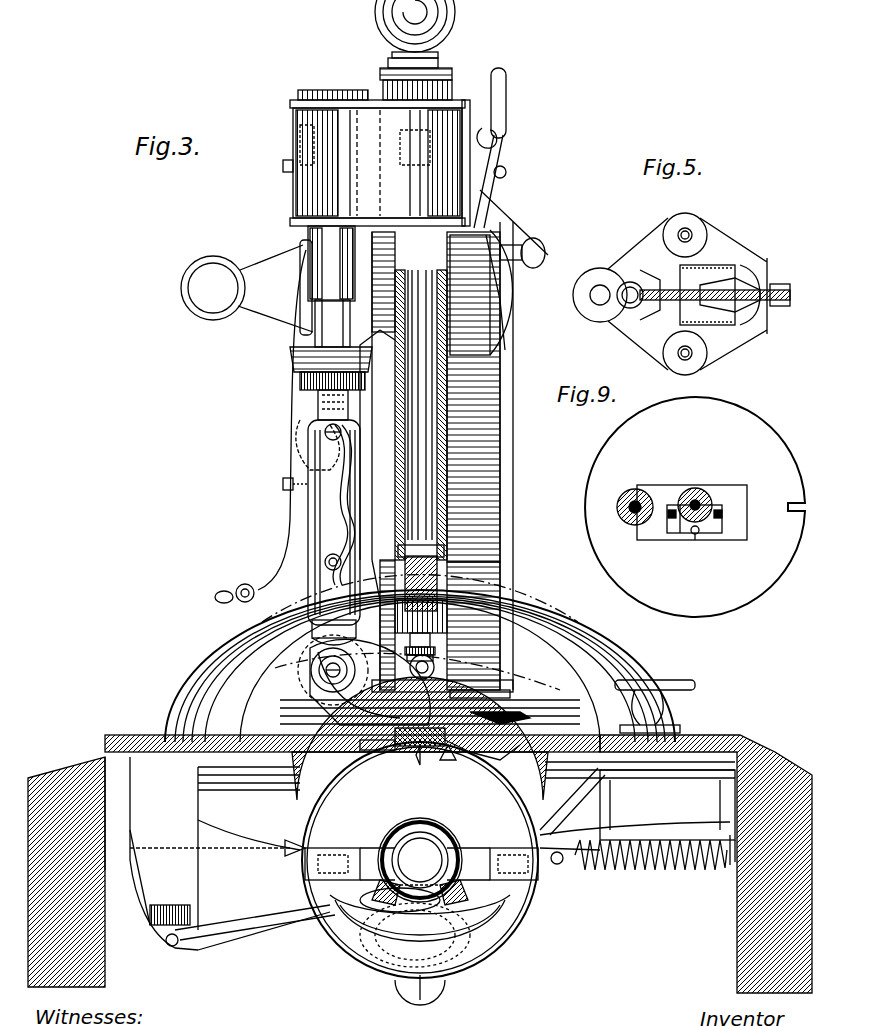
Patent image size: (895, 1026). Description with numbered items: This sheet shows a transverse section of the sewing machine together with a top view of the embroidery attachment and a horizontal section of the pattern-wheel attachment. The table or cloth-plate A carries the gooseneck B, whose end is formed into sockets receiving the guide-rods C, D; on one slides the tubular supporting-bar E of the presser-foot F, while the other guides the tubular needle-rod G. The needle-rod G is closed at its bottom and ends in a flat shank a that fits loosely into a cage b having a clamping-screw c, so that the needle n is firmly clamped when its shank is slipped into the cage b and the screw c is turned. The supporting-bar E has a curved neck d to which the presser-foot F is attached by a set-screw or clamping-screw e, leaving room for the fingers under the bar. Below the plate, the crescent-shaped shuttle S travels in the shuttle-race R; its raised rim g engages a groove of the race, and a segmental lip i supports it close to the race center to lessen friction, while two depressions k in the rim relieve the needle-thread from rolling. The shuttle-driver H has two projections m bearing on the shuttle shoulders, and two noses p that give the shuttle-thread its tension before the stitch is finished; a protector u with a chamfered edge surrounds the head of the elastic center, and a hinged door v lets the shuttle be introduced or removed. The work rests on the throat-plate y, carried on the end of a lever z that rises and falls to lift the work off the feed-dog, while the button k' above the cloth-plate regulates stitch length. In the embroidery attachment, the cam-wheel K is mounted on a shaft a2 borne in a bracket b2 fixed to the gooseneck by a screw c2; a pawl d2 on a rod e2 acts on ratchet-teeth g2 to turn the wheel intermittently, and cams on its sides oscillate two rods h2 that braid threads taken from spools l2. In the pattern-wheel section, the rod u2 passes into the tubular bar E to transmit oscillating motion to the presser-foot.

In FIG. 3, the table or cloth-plate A is at (228, 757).
In FIG. 9, the table or cloth-plate A is at (695, 507).
In FIG. 3, the gooseneck B is at (436, 457).
In FIG. 3, the guide-rod C is at (330, 313).
In FIG. 3, the guide-rod D is at (450, 312).
In FIG. 3, the tubular supporting-bar E is at (325, 506).
In FIG. 9, the tubular supporting-bar E is at (692, 512).
In FIG. 3, the presser-foot F is at (370, 682).
In FIG. 3, the tubular needle-rod G is at (429, 462).
In FIG. 9, the tubular needle-rod G is at (702, 509).
In FIG. 3, the shuttle-driver H is at (420, 827).
In FIG. 5, the cam-wheel K is at (721, 290).
In FIG. 3, the shuttle-race R is at (633, 829).
In FIG. 3, the shuttle S is at (420, 899).
In FIG. 3, the flat shank a is at (430, 653).
In FIG. 3, the cage b is at (430, 669).
In FIG. 3, the clamping-screw c is at (377, 747).
In FIG. 3, the curved neck d is at (350, 640).
In FIG. 3, the set-screw or clamping-screw e is at (350, 668).
In FIG. 9, the set-screw or clamping-screw e is at (680, 535).
In FIG. 3, the raised rim g is at (495, 935).
In FIG. 3, the segmental lip i is at (400, 916).
In FIG. 3, the depressions k is at (366, 932).
In FIG. 3, the button k' is at (659, 706).
In FIG. 3, the projections m is at (528, 905).
In FIG. 3, the needle n is at (440, 763).
In FIG. 3, the noses p is at (522, 895).
In FIG. 3, the protector u is at (430, 828).
In FIG. 3, the hinged door v is at (421, 866).
In FIG. 3, the throat-plate y is at (454, 767).
In FIG. 9, the throat-plate y is at (702, 519).
In FIG. 3, the lever z is at (490, 772).
In FIG. 5, the screw c2 is at (612, 286).
In FIG. 5, the pawl d2 is at (630, 283).
In FIG. 5, the ratchet-teeth g2 is at (637, 294).
In FIG. 5, the spools l2 is at (722, 362).
In FIG. 5, the rods h2 is at (734, 294).
In FIG. 5, the shaft a2 is at (710, 270).
In FIG. 5, the bracket b2 is at (725, 291).
In FIG. 9, the rod u2 is at (638, 500).
In FIG. 9, the rod e2 is at (698, 498).